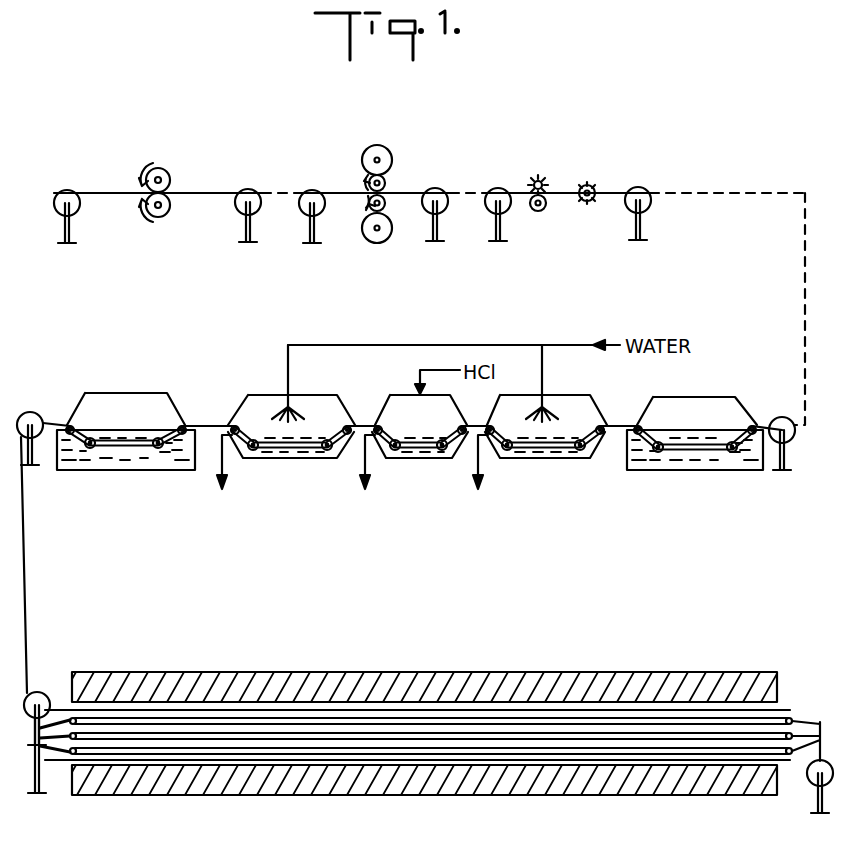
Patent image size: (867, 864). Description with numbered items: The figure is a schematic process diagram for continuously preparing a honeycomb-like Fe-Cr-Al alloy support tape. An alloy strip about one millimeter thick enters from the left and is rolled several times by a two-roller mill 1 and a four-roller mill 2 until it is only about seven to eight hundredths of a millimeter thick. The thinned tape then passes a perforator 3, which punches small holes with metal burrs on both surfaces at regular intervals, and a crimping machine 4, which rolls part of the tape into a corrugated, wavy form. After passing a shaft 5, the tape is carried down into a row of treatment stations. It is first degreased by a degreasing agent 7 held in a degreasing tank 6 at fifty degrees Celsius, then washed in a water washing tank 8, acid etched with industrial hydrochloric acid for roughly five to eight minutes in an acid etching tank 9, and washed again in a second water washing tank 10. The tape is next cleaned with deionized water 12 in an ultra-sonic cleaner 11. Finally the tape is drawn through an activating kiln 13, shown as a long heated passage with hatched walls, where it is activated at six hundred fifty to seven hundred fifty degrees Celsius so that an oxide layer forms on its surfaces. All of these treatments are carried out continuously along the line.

The two-roller mill 1 is at (167, 213).
The four-roller mill 2 is at (384, 206).
The perforator 3 is at (535, 212).
The crimping machine 4 is at (584, 205).
The shaft 5 is at (647, 208).
The degreasing tank 6 is at (750, 452).
The degreasing agent 7 is at (650, 452).
The water washing tank 8 is at (537, 448).
The acid etching tank 9 is at (415, 448).
The water washing tank 10 is at (282, 446).
The ultra-sonic cleaner 11 is at (176, 456).
The deionized water 12 is at (106, 446).
The activating kiln 13 is at (396, 795).